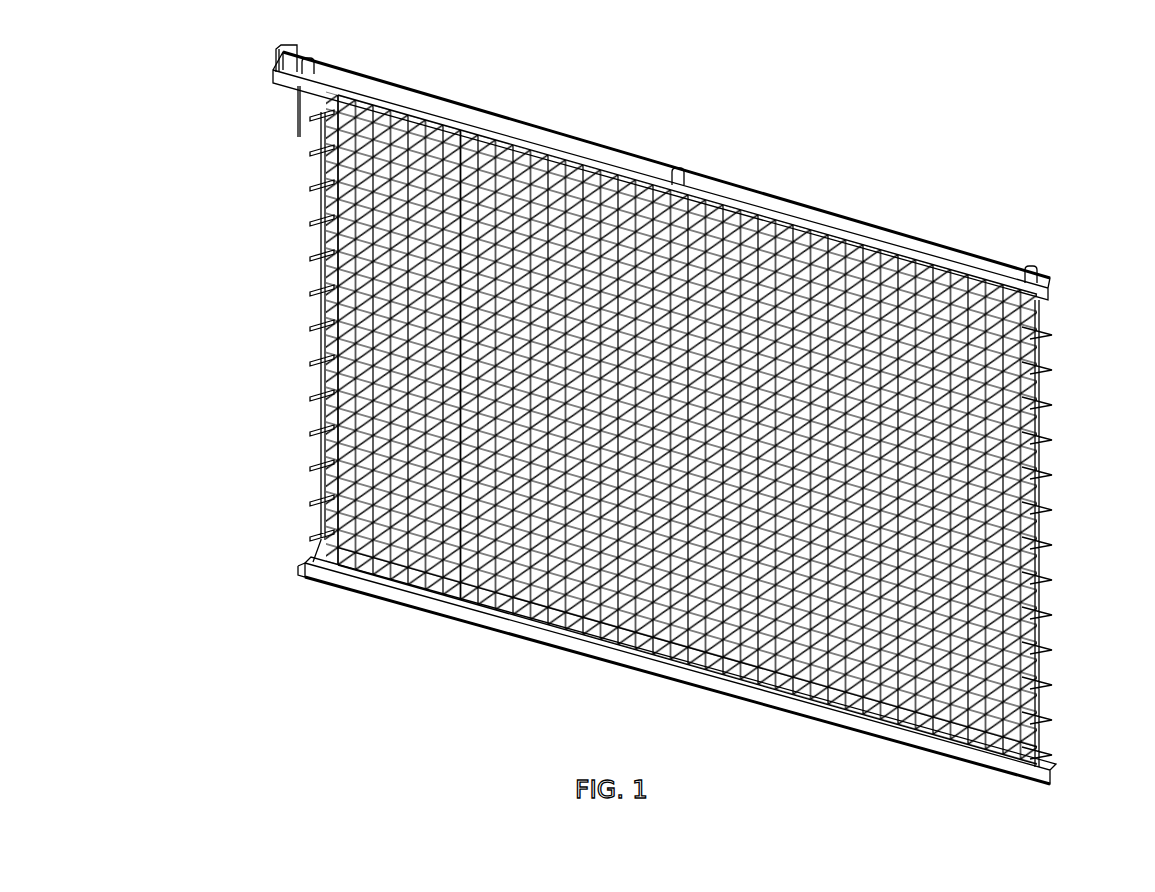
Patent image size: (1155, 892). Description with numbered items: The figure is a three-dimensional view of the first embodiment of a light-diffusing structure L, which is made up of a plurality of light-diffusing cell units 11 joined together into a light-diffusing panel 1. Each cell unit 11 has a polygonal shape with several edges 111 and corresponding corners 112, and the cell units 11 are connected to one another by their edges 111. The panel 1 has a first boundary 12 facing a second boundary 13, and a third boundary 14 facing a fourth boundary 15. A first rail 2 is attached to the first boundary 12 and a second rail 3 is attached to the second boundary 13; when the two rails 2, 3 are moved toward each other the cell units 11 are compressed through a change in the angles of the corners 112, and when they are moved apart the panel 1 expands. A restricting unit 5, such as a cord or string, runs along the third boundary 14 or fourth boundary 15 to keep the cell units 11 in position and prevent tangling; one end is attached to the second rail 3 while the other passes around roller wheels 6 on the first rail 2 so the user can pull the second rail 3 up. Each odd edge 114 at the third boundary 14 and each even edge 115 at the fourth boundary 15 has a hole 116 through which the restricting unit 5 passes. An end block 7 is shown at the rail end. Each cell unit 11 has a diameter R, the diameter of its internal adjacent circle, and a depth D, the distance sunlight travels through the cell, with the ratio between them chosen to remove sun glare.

The light-diffusing panel 1 is at (265, 357).
The first rail 2 is at (683, 176).
The second rail 3 is at (694, 673).
The restricting unit 5 is at (313, 478).
The roller wheels 6 is at (313, 62).
The end block 7 is at (273, 63).
The light-diffusing cell unit 11 is at (681, 428).
The edges 111 is at (462, 590).
The corners 112 is at (482, 587).
The first boundary 12 is at (772, 195).
The second boundary 13 is at (735, 688).
The third boundary 14 is at (1047, 511).
The fourth boundary 15 is at (318, 315).
The odd edge 114 is at (1053, 408).
The even edge 115 is at (312, 222).
The hole 116 is at (315, 433).
The diameter R is at (426, 68).
The depth D is at (320, 262).
The light-diffusing structure L is at (978, 101).